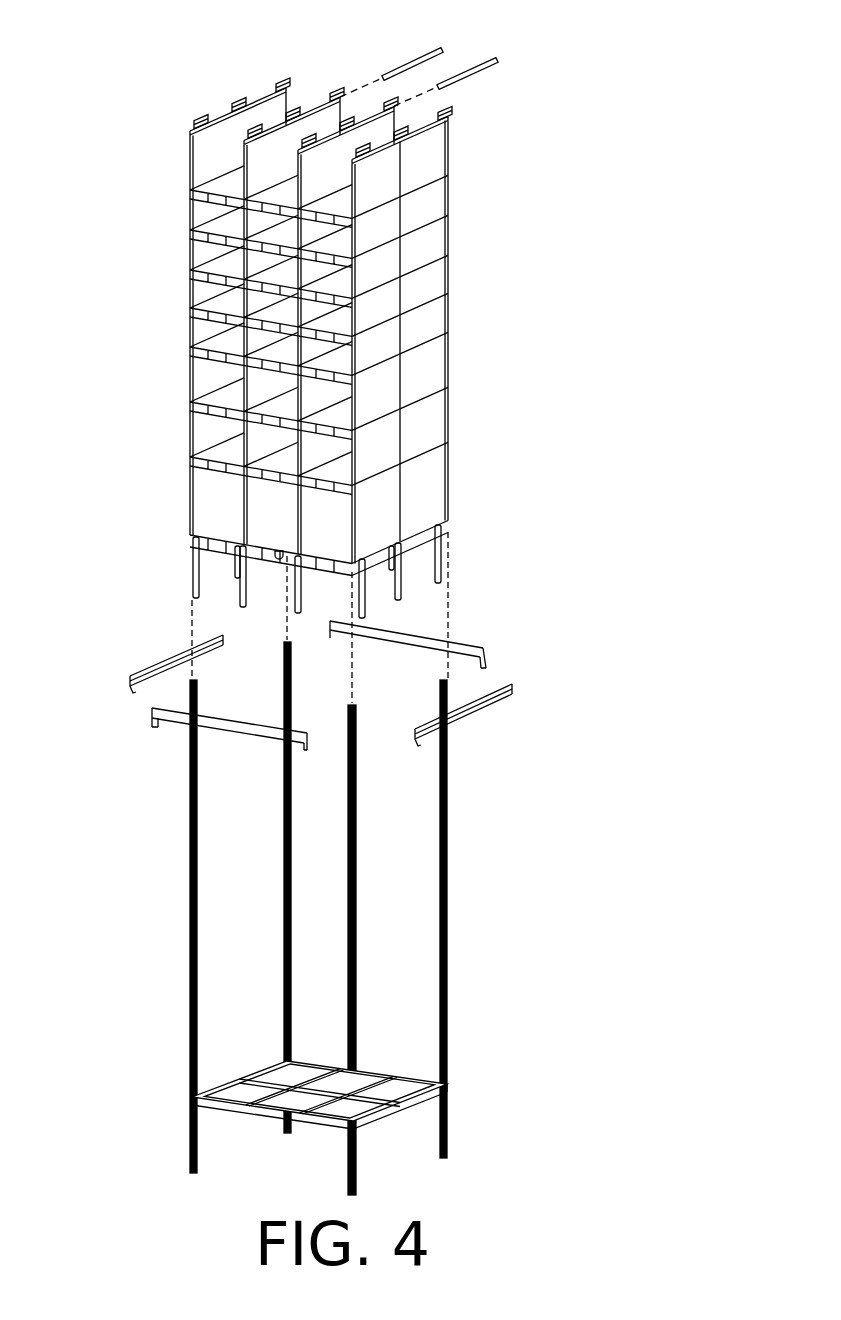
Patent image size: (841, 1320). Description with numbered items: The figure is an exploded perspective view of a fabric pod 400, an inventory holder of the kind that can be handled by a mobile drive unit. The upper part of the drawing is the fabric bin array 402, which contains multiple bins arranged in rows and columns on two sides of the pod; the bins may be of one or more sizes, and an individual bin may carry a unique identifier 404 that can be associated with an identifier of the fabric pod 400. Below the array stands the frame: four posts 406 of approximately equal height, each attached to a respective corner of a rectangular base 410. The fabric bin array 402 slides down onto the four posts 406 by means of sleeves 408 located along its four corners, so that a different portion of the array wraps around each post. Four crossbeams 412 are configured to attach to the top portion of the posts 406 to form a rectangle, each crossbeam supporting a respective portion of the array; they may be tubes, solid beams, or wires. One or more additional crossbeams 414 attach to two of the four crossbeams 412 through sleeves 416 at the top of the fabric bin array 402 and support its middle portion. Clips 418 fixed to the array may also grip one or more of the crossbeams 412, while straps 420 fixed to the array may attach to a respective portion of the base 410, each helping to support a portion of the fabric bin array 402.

The fabric pod 400 is at (122, 56).
The fabric bin array 402 is at (455, 318).
The unique identifier 404 is at (193, 459).
The posts 406 is at (450, 916).
The sleeves 408 is at (194, 538).
The base 410 is at (323, 1127).
The crossbeams 412 is at (487, 649).
The additional crossbeams 414 is at (488, 64).
The sleeves 416 is at (322, 102).
The clips 418 is at (236, 108).
The straps 420 is at (444, 571).